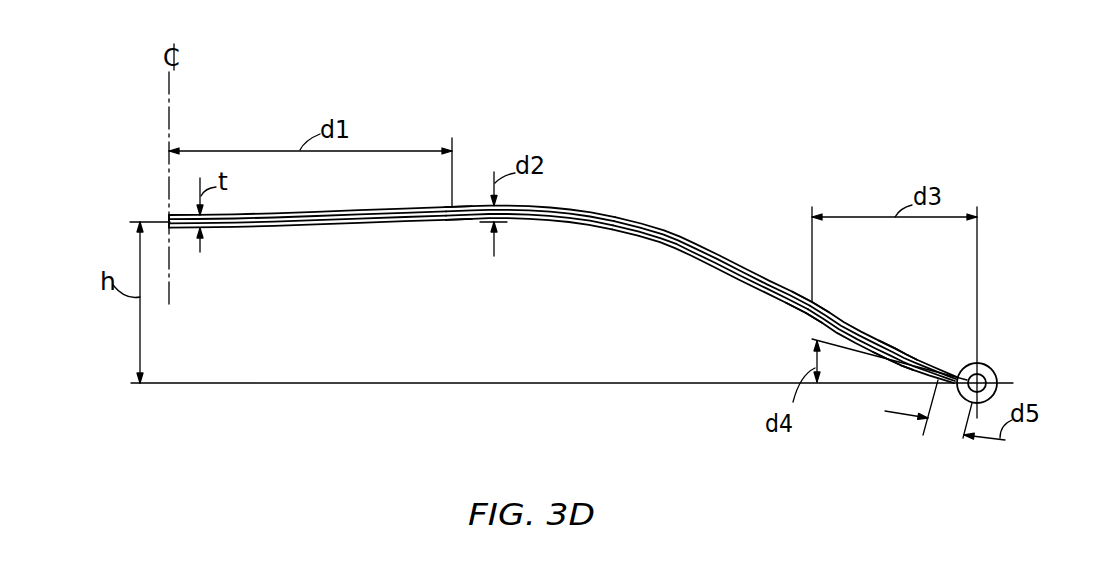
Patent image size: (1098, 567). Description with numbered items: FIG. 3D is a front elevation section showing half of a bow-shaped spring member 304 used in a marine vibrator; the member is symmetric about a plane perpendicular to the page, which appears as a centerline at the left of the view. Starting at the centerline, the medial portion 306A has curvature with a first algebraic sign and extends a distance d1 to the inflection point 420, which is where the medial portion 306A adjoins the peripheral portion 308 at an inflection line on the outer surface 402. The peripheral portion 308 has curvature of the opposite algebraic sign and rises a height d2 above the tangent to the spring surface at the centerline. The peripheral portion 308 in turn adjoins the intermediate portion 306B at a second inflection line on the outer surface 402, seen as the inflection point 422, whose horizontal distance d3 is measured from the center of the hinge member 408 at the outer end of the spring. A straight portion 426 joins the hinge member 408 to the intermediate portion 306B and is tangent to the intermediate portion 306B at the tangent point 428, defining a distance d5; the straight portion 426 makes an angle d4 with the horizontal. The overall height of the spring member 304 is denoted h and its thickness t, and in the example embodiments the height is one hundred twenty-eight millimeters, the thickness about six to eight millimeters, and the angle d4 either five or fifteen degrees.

The bow-shaped spring member 304 is at (618, 88).
The medial portion 306A is at (285, 210).
The intermediate portion 306B is at (828, 306).
The peripheral portion 308 is at (646, 216).
The outer surface 402 is at (573, 200).
The hinge member 408 is at (1001, 357).
The inflection point 420 is at (456, 205).
The inflection point 422 is at (806, 297).
The straight portion 426 is at (972, 363).
The tangent point 428 is at (893, 343).